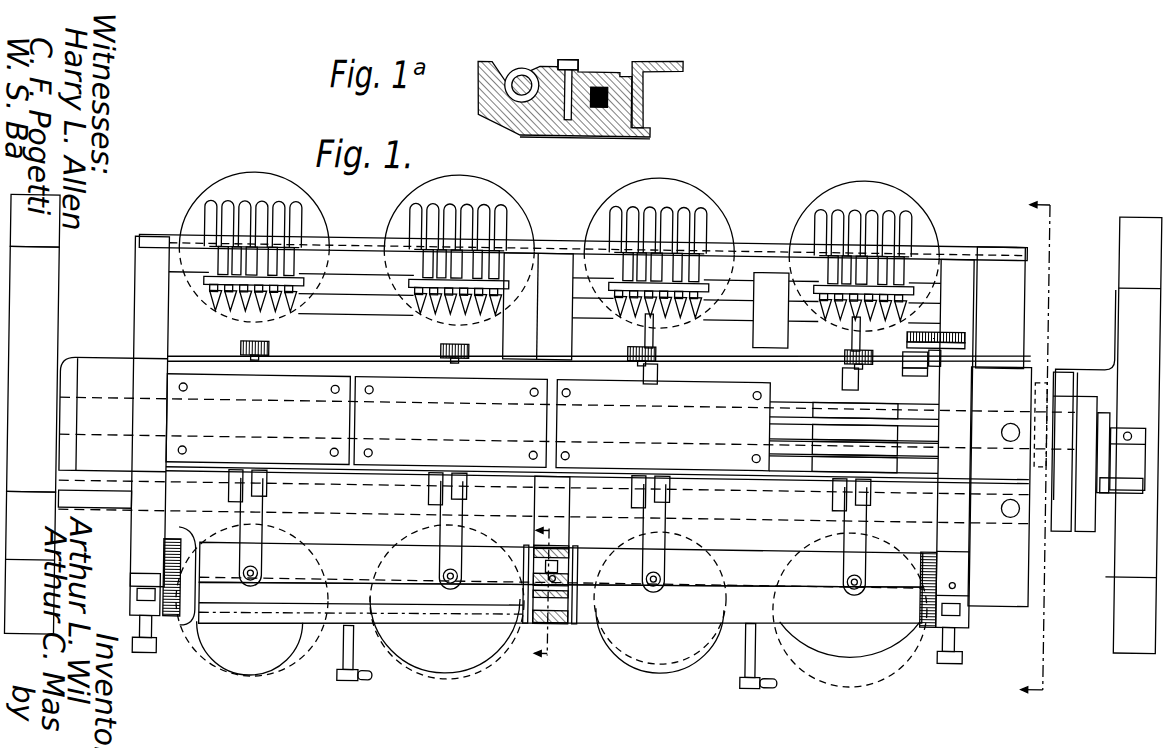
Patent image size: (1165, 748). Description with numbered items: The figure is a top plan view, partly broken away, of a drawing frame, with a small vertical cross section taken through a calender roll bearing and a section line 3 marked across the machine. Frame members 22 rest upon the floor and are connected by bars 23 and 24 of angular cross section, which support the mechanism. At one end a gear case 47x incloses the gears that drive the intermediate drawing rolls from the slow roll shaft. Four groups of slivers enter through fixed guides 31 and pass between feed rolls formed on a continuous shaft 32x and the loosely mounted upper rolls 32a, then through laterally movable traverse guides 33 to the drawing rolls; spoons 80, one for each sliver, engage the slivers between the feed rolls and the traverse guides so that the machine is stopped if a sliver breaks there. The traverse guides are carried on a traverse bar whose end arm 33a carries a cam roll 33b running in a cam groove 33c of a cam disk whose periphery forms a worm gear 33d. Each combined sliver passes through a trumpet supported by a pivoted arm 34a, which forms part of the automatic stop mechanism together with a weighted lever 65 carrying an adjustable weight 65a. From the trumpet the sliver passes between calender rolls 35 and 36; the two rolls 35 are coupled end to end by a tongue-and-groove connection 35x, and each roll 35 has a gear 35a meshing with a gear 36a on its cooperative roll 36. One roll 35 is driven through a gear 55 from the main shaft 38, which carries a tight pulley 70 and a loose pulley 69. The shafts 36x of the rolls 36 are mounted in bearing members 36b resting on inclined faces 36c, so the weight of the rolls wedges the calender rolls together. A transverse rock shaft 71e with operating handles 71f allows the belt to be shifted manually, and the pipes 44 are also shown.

In FIG. 1, the frame members 22 is at (57, 251).
In FIG. 1, the bar 23 is at (60, 504).
In FIG. 1, the gear case 47x is at (97, 372).
In FIG. 1, the fixed guides 31 is at (856, 204).
In FIG. 1, the rolls 32a is at (222, 268).
In FIG. 1, the continuous shaft 32x is at (756, 252).
In FIG. 1, the spoons 80 is at (265, 306).
In FIG. 1, the traverse guides 33 is at (240, 347).
In FIG. 1, the weighted lever 65 is at (644, 333).
In FIG. 1, the adjustable weight 65a is at (652, 368).
In FIG. 1, the worm gear 33d is at (935, 322).
In FIG. 1, the cam groove 33c is at (941, 348).
In FIG. 1, the cam roll 33b is at (910, 360).
In FIG. 1, the arm 33a is at (927, 364).
In FIG. 1, the pipes 44 is at (898, 401).
In FIG. 1, the bar 24 is at (1072, 356).
In FIG. 1, the main shaft 38 is at (1104, 466).
In FIG. 1, the gear 55 is at (633, 372).
In FIG. 1, the gear 35a is at (231, 480).
In FIG. 1, the arm 34a is at (265, 500).
In FIG. 1A, the tongue-and-groove connection 35x is at (600, 131).
In FIG. 1, the tongue-and-groove connection 35x is at (578, 540).
In FIG. 1A, the calender rolls 35 is at (592, 56).
In FIG. 1, the calender rolls 35 is at (750, 544).
In FIG. 1A, the calender rolls 36 is at (510, 42).
In FIG. 1, the calender rolls 36 is at (561, 605).
In FIG. 1, the gear 36a is at (172, 619).
In FIG. 1, the shafts 36x is at (559, 596).
In FIG. 1, the pulley 70 is at (1064, 520).
In FIG. 1, the pulley 69 is at (1086, 520).
In FIG. 1, the rock shaft 71e is at (345, 660).
In FIG. 1, the operating handles 71f is at (370, 680).
In FIG. 1, the section line 3 is at (1044, 445).
In FIG. 1A, the bearing members 36b is at (508, 74).
In FIG. 1A, the inclined faces 36c is at (497, 92).